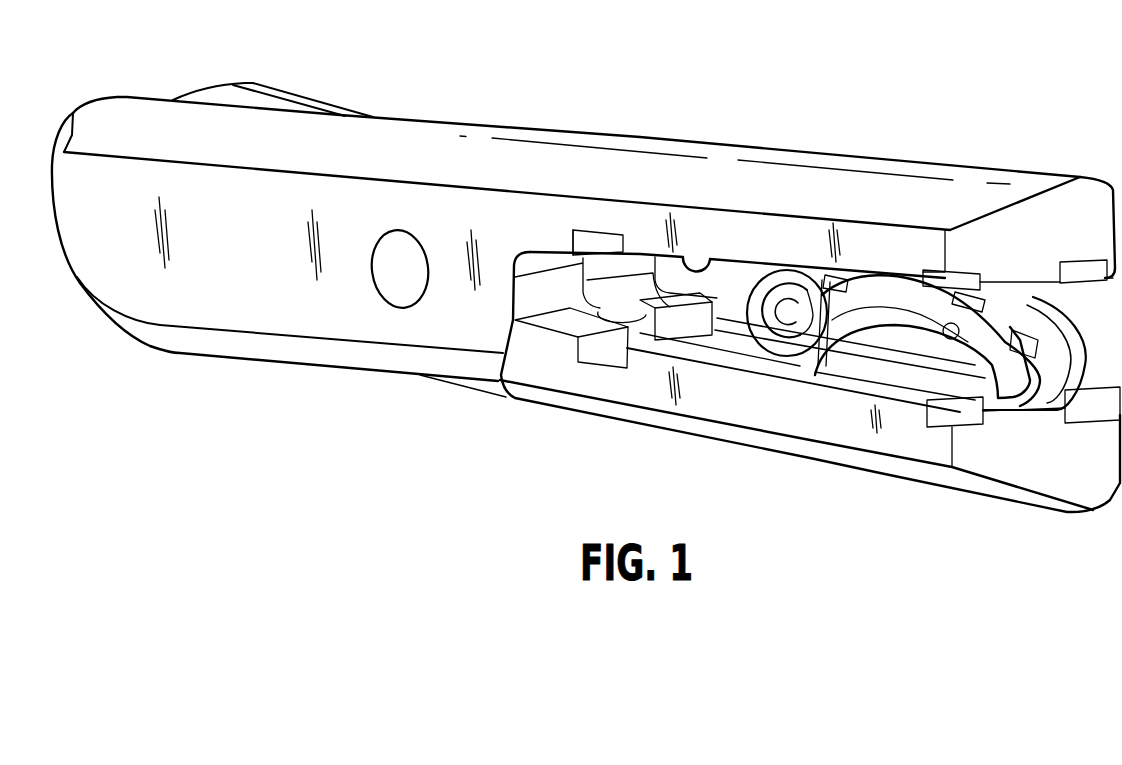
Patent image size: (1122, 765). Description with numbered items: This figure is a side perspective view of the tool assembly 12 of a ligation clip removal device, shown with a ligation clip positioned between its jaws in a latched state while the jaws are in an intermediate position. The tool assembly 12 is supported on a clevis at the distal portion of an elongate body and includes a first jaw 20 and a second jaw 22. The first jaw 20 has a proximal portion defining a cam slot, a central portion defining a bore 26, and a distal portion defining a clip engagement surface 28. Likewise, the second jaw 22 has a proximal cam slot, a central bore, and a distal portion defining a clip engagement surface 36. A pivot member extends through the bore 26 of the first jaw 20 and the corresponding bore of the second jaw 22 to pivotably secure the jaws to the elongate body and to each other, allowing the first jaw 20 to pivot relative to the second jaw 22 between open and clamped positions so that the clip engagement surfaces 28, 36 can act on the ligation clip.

The tool assembly 12 is at (677, 124).
The first jaw 20 is at (813, 158).
The second jaw 22 is at (610, 403).
The bore 26 is at (417, 300).
The clip engagement surface 28 is at (711, 259).
The clip engagement surface 36 is at (867, 368).